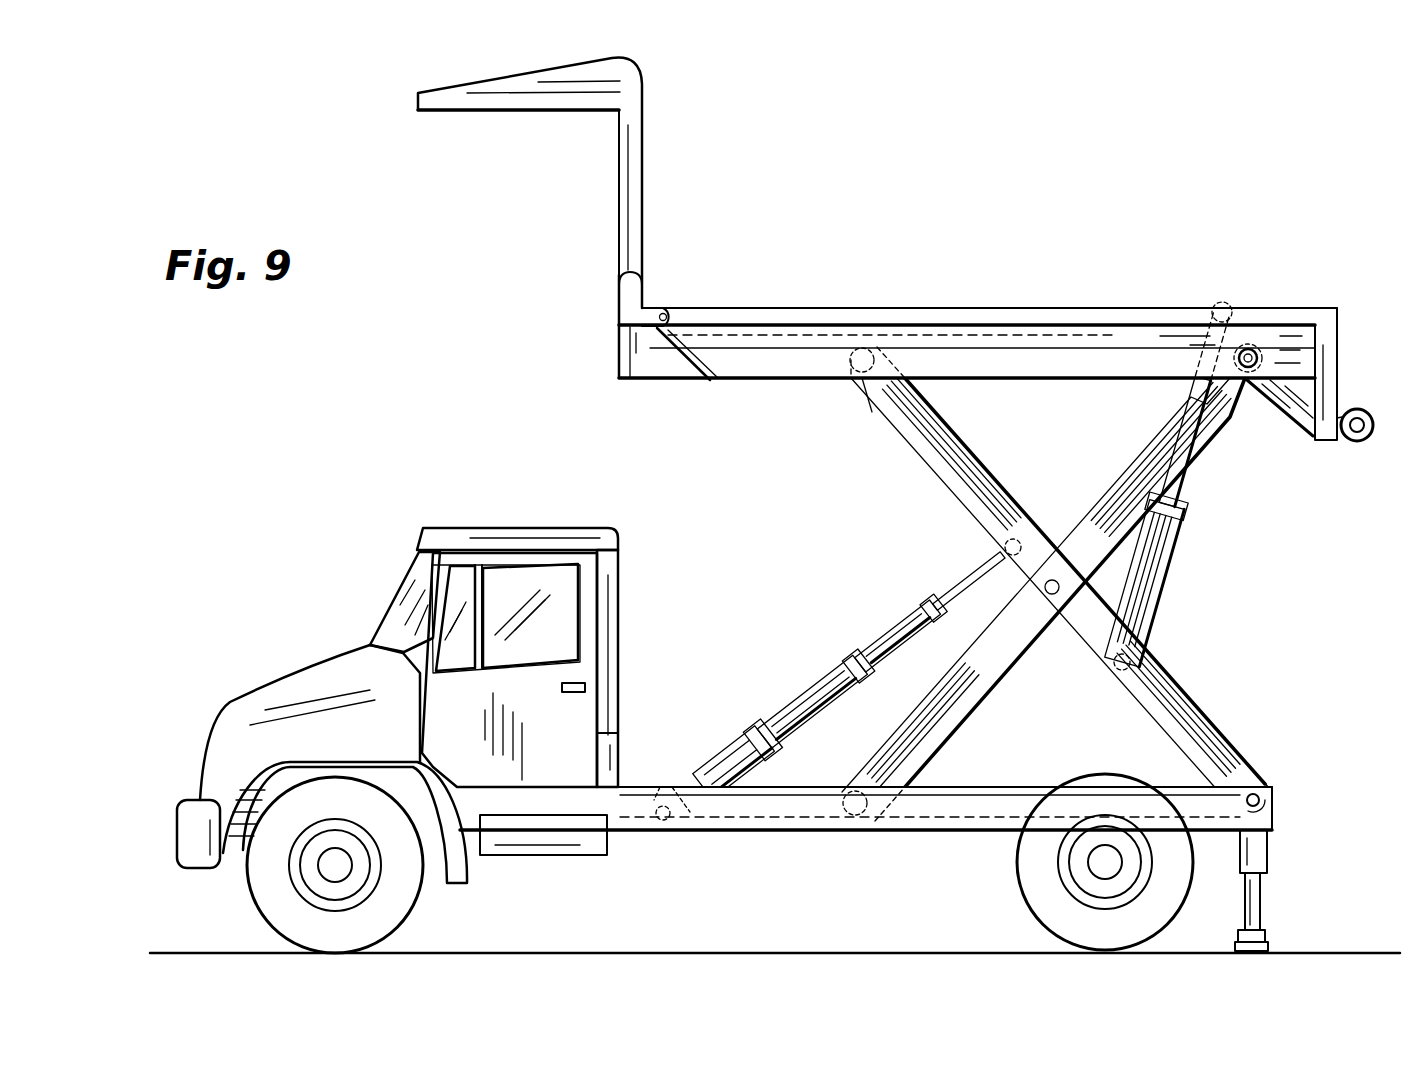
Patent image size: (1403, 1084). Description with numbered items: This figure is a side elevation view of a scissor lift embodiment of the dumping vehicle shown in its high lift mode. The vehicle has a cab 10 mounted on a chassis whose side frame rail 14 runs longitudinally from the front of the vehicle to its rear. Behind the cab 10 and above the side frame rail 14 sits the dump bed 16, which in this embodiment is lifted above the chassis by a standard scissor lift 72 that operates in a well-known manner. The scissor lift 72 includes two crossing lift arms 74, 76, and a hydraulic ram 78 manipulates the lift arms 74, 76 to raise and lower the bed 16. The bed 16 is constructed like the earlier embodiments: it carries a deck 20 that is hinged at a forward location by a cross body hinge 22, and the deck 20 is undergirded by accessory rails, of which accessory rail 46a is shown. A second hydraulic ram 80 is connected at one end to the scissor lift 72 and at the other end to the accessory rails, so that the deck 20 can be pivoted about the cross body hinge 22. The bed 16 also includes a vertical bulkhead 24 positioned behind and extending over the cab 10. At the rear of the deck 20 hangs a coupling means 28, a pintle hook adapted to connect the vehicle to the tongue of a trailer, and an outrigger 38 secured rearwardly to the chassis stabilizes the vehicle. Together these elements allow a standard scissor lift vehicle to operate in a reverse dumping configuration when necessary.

The cab 10 is at (350, 626).
The side frame rail 14 is at (977, 818).
The dump bed 16 is at (596, 305).
The deck 20 is at (1283, 312).
The cross body hinge 22 is at (666, 309).
The vertical bulkhead 24 is at (645, 135).
The coupling means 28 is at (1373, 437).
The outrigger 38 is at (1263, 912).
The accessory rail 46a is at (775, 342).
The scissor lift 72 is at (905, 486).
The lift arm 74 is at (1083, 637).
The lift arm 76 is at (1133, 476).
The hydraulic ram 78 is at (782, 716).
The hydraulic ram 80 is at (1162, 563).